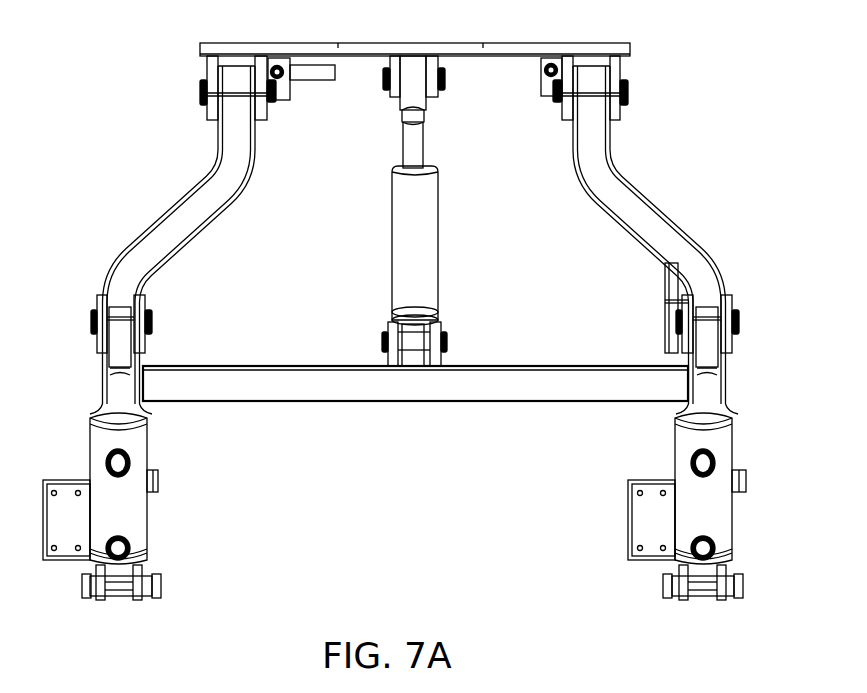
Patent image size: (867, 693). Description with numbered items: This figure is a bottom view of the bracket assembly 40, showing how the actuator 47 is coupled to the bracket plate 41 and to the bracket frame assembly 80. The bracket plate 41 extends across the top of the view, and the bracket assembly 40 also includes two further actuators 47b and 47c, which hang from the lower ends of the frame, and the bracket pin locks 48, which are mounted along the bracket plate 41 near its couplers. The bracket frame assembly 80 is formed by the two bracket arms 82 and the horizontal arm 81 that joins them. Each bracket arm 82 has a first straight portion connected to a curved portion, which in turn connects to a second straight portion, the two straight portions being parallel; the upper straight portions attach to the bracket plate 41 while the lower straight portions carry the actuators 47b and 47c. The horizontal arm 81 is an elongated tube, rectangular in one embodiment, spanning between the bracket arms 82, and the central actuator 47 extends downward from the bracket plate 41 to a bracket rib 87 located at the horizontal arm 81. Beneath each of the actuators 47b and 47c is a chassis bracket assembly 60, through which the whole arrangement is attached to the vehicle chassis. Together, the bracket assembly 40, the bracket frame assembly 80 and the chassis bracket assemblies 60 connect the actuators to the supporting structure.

The bracket assembly 40 is at (624, 109).
The bracket plate 41 is at (419, 50).
The actuator 47 is at (413, 284).
The actuator 47b is at (731, 446).
The actuator 47c is at (101, 440).
The bracket pin lock 48 is at (279, 80).
The chassis bracket assembly 60 is at (98, 590).
The bracket frame assembly 80 is at (698, 239).
The horizontal arm 81 is at (321, 379).
The bracket arm 82 is at (183, 202).
The bracket rib 87 is at (438, 351).